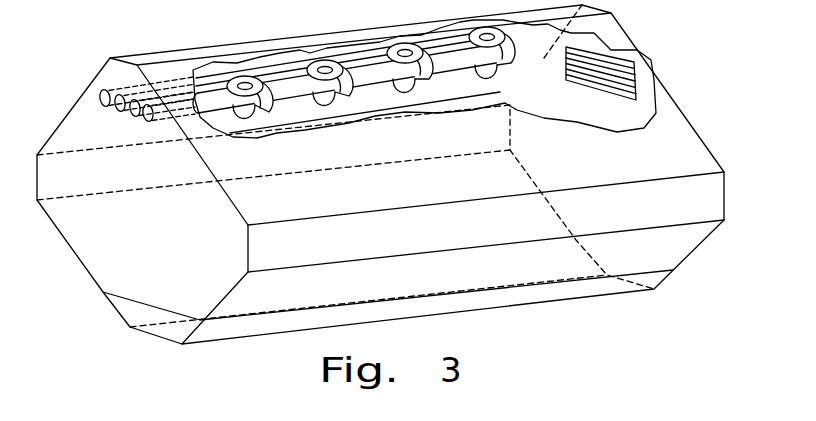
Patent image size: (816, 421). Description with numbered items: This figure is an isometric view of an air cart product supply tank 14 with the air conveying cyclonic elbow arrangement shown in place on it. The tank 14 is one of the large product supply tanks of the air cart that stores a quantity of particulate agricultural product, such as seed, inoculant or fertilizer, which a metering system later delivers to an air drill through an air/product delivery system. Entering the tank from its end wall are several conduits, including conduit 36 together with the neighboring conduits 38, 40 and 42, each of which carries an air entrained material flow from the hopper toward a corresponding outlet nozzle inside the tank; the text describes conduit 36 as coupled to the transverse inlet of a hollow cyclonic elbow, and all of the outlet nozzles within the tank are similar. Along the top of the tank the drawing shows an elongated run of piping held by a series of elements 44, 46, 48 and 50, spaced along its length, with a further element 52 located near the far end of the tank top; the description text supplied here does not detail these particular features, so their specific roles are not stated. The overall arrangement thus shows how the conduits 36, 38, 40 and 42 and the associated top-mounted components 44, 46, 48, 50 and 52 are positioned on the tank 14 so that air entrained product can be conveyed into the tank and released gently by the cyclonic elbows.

The product supply tank 14 is at (177, 261).
The conduit 36 is at (144, 125).
The tube 38 is at (131, 116).
The tube 40 is at (117, 111).
The tube 42 is at (100, 92).
The clamp 44 is at (253, 120).
The clamp 46 is at (332, 110).
The clamp 48 is at (405, 83).
The clamp 50 is at (491, 74).
The vent grille 52 is at (601, 87).